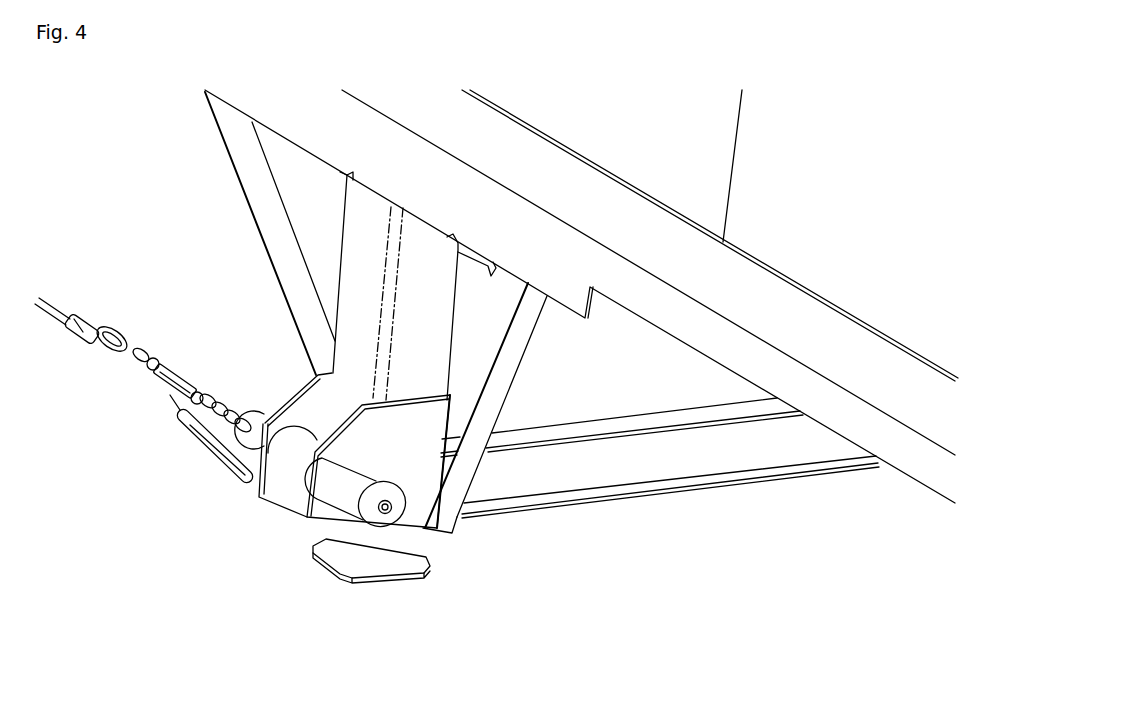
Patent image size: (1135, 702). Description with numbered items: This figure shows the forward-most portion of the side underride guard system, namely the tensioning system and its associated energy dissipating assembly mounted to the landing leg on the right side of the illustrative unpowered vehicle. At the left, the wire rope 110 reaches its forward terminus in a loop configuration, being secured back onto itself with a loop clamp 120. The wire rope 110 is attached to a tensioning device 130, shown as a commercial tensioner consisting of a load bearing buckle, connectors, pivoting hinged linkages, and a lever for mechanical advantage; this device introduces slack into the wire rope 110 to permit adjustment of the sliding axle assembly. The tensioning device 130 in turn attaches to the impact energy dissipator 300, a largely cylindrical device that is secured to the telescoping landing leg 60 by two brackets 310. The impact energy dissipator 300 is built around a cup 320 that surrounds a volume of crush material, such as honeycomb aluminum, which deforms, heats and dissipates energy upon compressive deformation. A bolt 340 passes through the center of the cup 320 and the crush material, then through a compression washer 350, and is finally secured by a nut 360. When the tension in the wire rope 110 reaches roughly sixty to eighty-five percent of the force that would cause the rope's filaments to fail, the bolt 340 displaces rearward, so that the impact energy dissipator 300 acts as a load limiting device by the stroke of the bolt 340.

The telescoping landing leg 60 is at (356, 268).
The wire rope 110 is at (52, 306).
The loop clamp 120 is at (96, 322).
The tensioning device 130 is at (171, 392).
The impact energy dissipator 300 is at (287, 546).
The bracket 310 is at (300, 405).
The cup 320 is at (258, 470).
The bolt 340 is at (234, 408).
The compression washer 350 is at (388, 513).
The nut 360 is at (380, 513).